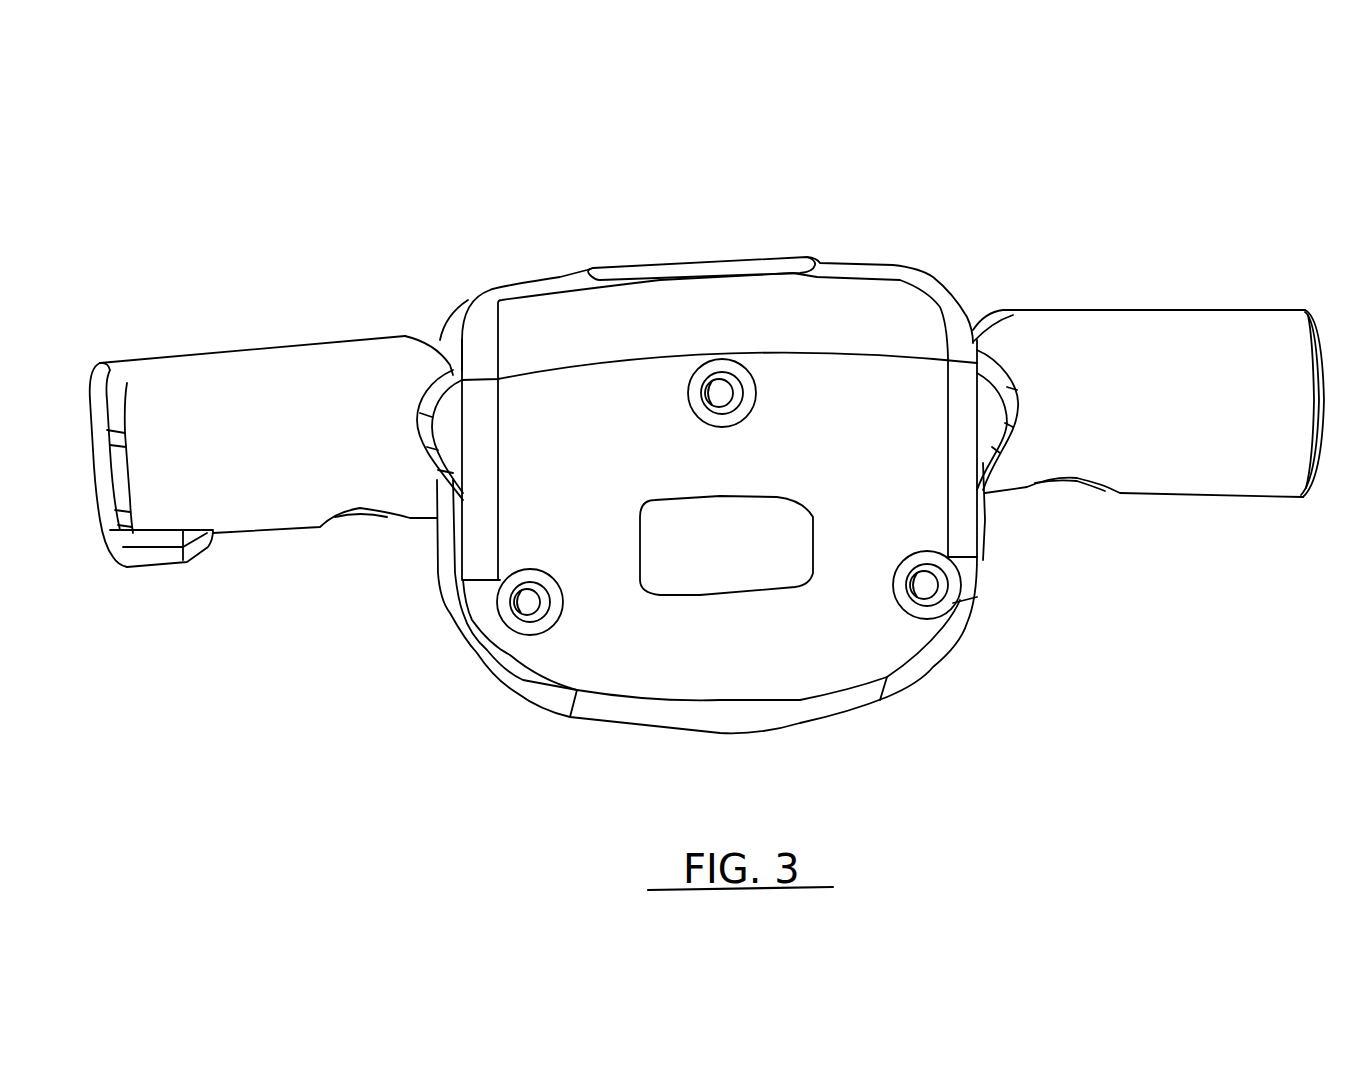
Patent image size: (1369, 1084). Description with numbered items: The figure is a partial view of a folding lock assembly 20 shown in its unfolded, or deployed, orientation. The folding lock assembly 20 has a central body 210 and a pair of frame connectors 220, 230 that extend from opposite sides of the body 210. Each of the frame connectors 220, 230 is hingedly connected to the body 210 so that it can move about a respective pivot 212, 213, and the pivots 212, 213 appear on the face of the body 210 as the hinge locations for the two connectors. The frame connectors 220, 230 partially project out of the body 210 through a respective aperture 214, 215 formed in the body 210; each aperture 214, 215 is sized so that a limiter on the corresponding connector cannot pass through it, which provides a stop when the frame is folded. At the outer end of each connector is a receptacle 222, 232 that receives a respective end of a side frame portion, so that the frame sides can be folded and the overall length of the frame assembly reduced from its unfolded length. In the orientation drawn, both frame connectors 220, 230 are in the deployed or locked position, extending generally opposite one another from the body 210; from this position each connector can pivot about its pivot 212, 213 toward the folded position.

The folding lock assembly 20 is at (1033, 153).
The body 210 is at (893, 297).
The pivot 212 is at (930, 587).
The pivot 213 is at (527, 607).
The aperture 214 is at (985, 302).
The aperture 215 is at (435, 328).
The frame connector 220 is at (1047, 505).
The receptacle 222 is at (1337, 328).
The frame connector 230 is at (388, 533).
The receptacle 232 is at (73, 412).